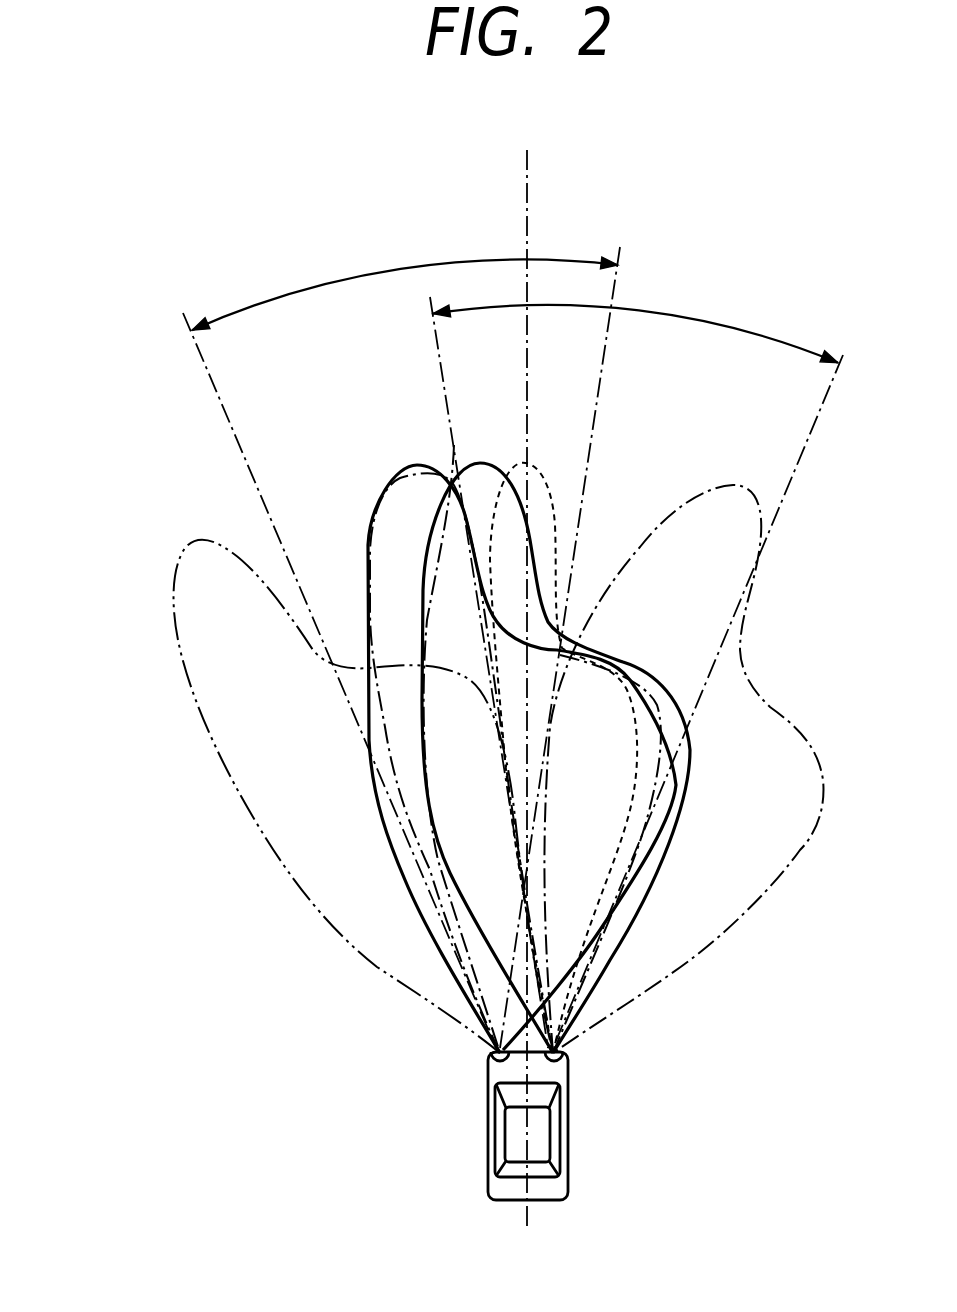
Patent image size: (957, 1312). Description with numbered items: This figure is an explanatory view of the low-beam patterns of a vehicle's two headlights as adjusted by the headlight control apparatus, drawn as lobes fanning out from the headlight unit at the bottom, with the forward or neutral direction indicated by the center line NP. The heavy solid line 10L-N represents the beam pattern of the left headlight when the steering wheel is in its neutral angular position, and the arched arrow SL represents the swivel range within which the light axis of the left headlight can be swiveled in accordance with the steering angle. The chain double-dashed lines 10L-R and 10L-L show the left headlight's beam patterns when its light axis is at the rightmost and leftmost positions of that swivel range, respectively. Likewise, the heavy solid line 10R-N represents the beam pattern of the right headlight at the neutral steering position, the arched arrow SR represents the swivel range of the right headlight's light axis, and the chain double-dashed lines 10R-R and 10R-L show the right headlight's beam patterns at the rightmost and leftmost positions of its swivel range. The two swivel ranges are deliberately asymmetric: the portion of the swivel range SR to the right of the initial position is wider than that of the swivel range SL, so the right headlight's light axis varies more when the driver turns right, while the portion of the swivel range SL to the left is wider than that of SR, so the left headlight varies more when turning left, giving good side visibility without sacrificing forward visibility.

The normal (center) direction line NP is at (522, 667).
The swivel range SL is at (367, 274).
The swivel range SR is at (720, 325).
The beam pattern 10L-L is at (187, 670).
The beam pattern 10L-N is at (420, 466).
The beam pattern 10L-R is at (540, 479).
The beam pattern 10R-L is at (436, 485).
The beam pattern 10R-N is at (513, 475).
The beam pattern 10R-R is at (760, 574).